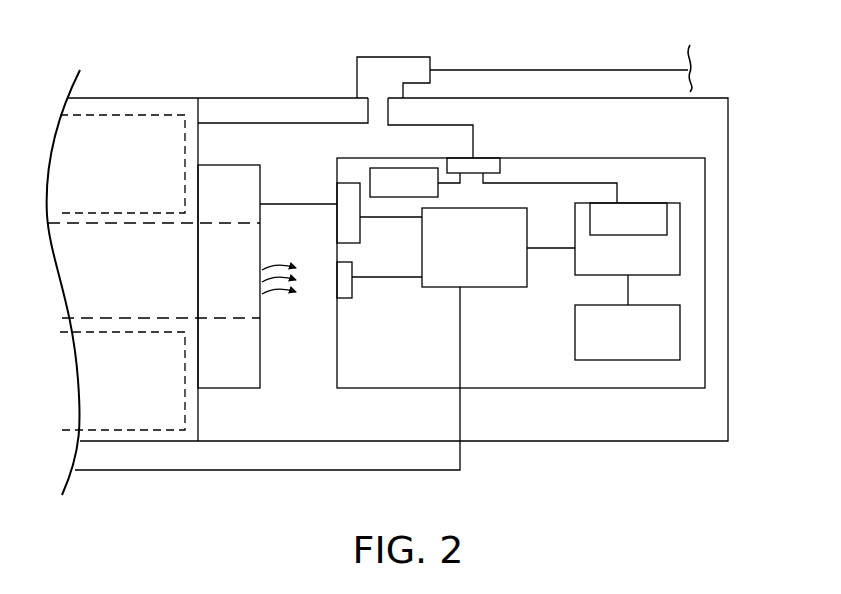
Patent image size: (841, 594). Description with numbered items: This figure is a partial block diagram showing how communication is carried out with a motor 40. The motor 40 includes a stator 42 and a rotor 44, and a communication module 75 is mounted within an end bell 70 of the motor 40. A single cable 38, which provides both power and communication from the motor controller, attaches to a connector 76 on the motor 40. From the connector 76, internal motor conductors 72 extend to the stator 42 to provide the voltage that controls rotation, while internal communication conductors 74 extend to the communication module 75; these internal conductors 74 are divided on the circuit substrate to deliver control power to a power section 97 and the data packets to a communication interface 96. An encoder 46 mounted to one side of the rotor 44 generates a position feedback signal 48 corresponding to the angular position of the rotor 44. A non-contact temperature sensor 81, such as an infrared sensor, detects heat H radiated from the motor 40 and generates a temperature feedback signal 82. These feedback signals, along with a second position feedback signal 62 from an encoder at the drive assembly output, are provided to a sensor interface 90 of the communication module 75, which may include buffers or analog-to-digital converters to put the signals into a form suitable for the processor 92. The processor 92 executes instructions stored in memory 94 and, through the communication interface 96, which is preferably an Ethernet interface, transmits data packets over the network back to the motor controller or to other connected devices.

The single cable 38 is at (469, 68).
The motor 40 is at (100, 98).
The stator 42 is at (122, 272).
The rotor 44 is at (154, 270).
The encoder 46 is at (213, 390).
The position feedback signal 48 is at (311, 200).
The second position feedback signal 62 is at (233, 471).
The end bell 70 is at (264, 96).
The internal motor conductors 72 is at (280, 124).
The internal communication conductors 74 is at (446, 121).
The communication module 75 is at (548, 390).
The connector 76 is at (362, 55).
The non-contact temperature sensor 81 is at (343, 299).
The temperature feedback signal 82 is at (377, 278).
The sensor interface 90 is at (483, 288).
The processor 92 is at (681, 243).
The memory 94 is at (681, 325).
The communication interface 96 is at (634, 200).
The power section 97 is at (396, 198).
The heat H is at (272, 262).